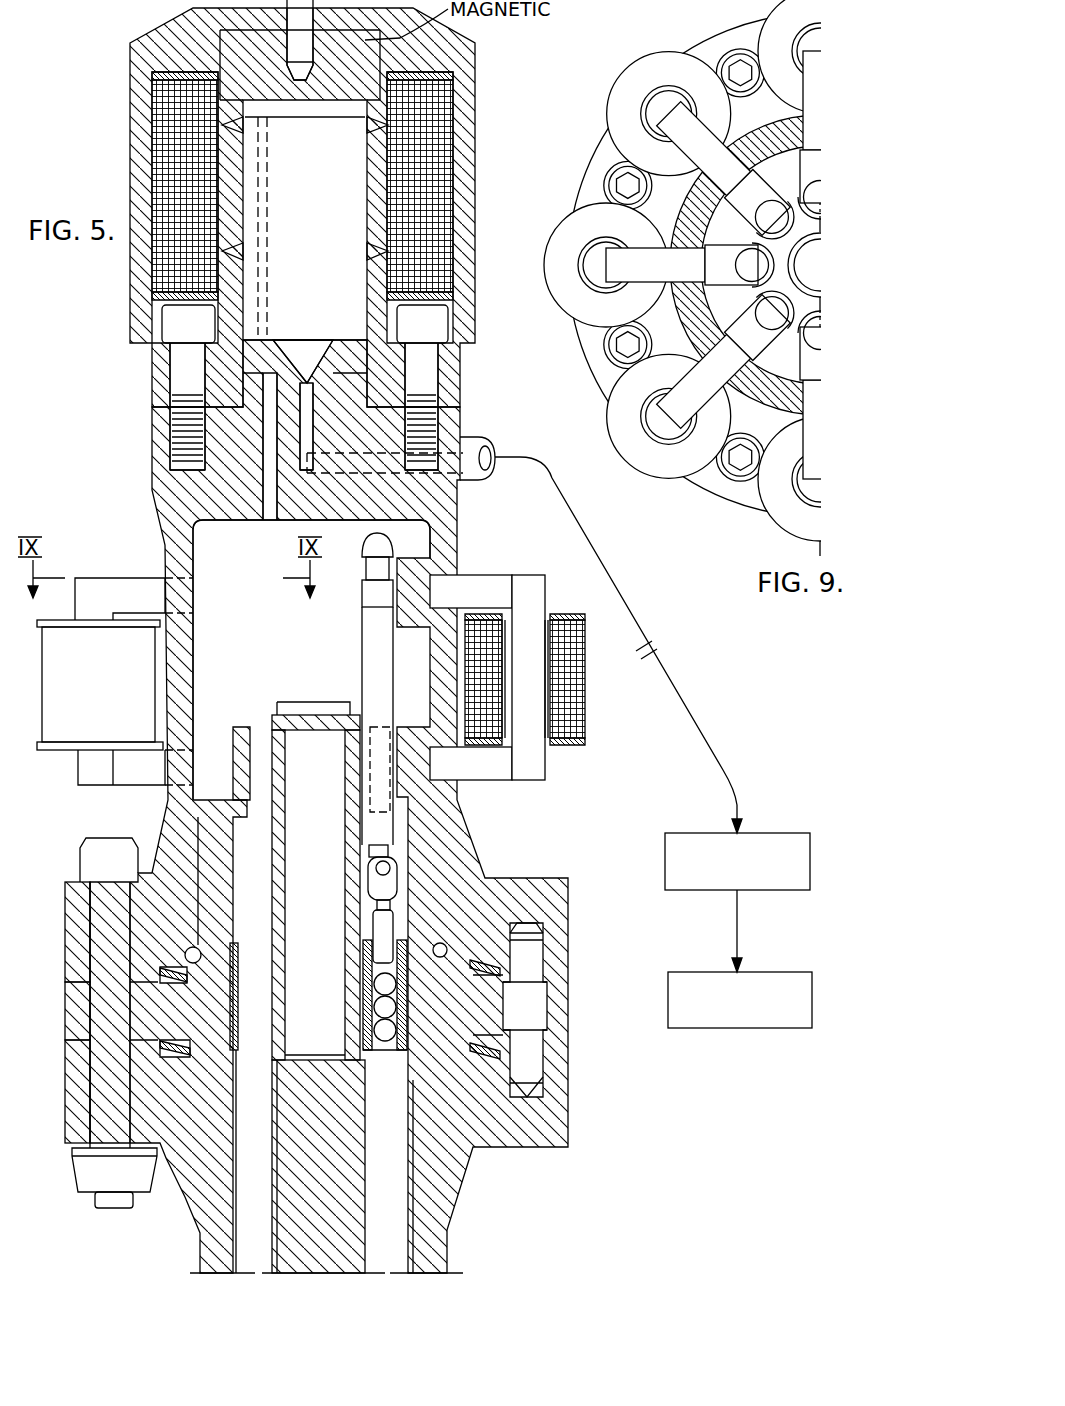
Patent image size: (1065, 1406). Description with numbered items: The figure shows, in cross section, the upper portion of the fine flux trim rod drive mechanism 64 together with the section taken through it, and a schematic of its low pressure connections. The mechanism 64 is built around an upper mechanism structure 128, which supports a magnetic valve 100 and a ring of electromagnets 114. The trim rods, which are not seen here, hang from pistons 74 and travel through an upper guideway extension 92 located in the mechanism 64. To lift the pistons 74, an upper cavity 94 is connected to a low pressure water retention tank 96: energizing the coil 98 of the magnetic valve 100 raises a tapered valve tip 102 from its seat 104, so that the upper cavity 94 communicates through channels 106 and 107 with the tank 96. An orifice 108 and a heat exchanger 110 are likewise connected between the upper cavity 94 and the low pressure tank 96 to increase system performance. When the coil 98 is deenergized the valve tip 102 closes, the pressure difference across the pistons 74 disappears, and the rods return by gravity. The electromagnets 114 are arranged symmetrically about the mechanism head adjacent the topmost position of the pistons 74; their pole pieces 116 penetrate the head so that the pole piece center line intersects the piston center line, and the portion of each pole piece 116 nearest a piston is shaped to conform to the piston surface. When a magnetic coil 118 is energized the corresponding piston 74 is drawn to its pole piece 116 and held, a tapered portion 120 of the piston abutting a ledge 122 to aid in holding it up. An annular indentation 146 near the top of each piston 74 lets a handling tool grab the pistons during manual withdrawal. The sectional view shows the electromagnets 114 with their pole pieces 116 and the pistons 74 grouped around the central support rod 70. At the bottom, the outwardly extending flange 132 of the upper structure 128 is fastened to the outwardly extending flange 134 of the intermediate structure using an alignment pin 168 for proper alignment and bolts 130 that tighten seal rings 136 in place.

In FIG. 5, the mechanism 64 is at (165, 545).
In FIG. 9, the mechanism 64 is at (742, 23).
In FIG. 9, the central support rod 70 is at (790, 278).
In FIG. 5, the piston 74 is at (390, 827).
In FIG. 5, the upper guideway extension 92 is at (363, 993).
In FIG. 5, the upper cavity 94 is at (308, 664).
In FIG. 5, the water retention tank 96 is at (794, 972).
In FIG. 5, the coil 98 is at (430, 137).
In FIG. 5, the magnetic valve 100 is at (330, 229).
In FIG. 5, the tapered valve tip 102 is at (307, 350).
In FIG. 5, the seat 104 is at (317, 380).
In FIG. 5, the channel 106 is at (272, 490).
In FIG. 5, the channel 107 is at (313, 480).
In FIG. 5, the orifice 108 is at (654, 641).
In FIG. 5, the heat exchanger 110 is at (788, 833).
In FIG. 5, the electromagnet 114 is at (572, 718).
In FIG. 9, the electromagnet 114 is at (568, 215).
In FIG. 5, the pole piece 116 is at (440, 587).
In FIG. 9, the pole piece 116 is at (727, 253).
In FIG. 5, the magnetic coil 118 is at (570, 690).
In FIG. 9, the magnetic coil 118 is at (572, 300).
In FIG. 5, the tapered portion 120 is at (372, 855).
In FIG. 5, the ledge 122 is at (390, 862).
In FIG. 5, the upper mechanism structure 128 is at (38, 719).
In FIG. 5, the bolt 130 is at (93, 860).
In FIG. 5, the outwardly extending flange 132 is at (80, 935).
In FIG. 5, the outwardly extending flange 134 is at (75, 1083).
In FIG. 5, the seal ring 136 is at (187, 973).
In FIG. 5, the annular indentation 146 is at (366, 585).
In FIG. 5, the alignment pin 168 is at (533, 953).